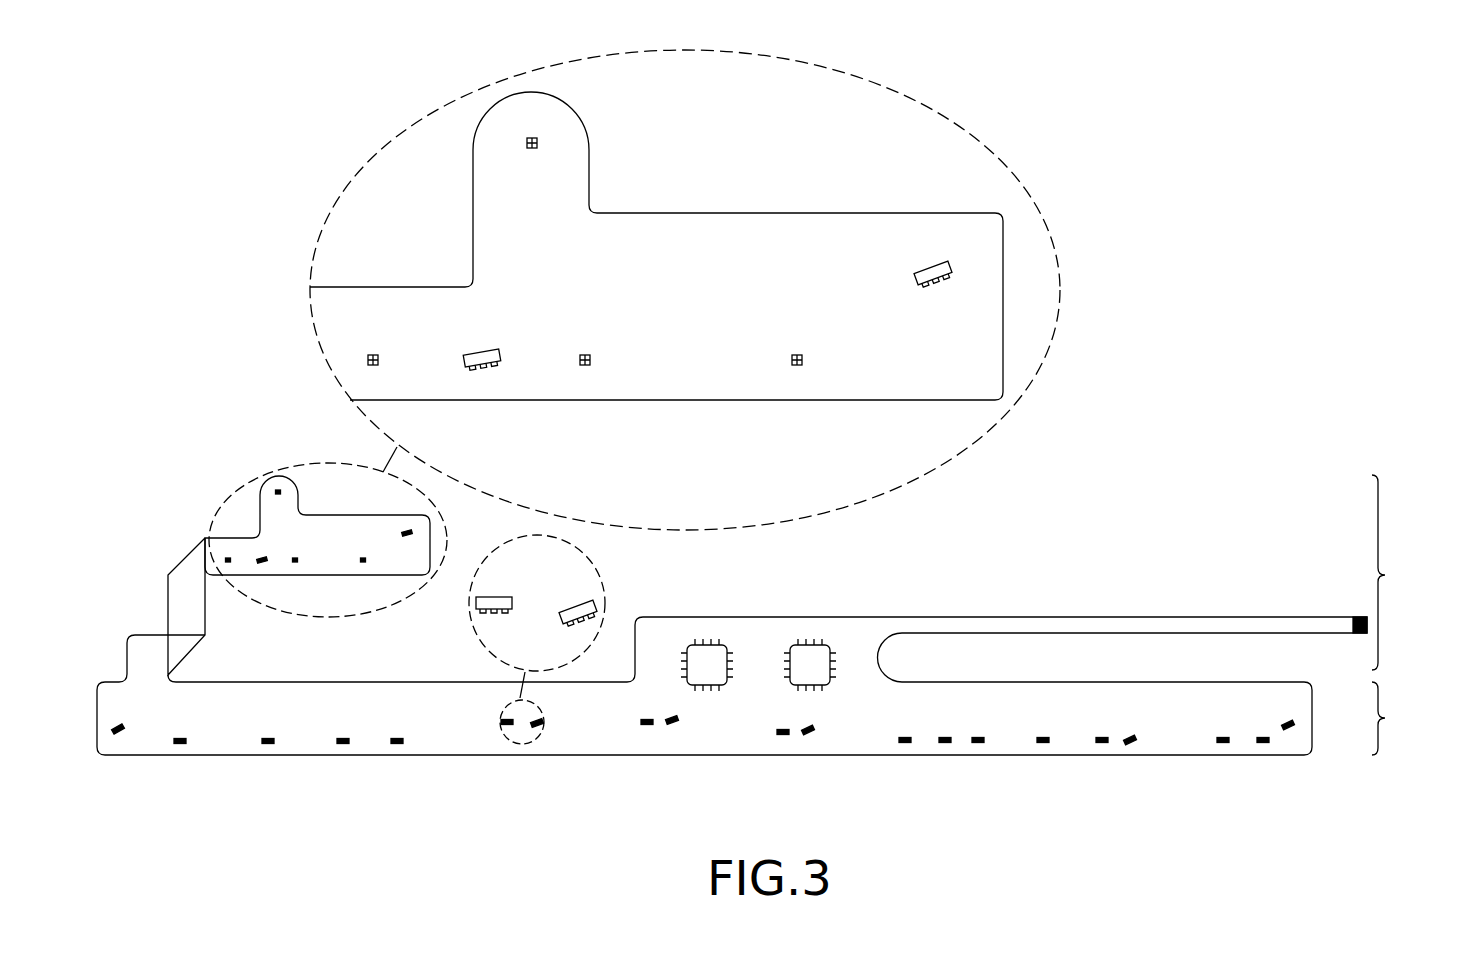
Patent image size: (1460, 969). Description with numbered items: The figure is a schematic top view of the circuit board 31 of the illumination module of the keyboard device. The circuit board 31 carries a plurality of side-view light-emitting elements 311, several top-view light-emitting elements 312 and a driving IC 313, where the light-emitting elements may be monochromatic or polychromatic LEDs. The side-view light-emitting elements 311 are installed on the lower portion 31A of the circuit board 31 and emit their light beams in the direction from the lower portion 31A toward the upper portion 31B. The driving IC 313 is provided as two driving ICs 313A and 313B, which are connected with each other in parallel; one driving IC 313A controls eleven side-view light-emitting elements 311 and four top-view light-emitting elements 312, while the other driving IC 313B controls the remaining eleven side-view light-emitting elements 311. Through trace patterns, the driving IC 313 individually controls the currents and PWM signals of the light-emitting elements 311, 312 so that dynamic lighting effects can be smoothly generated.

The circuit board 31 is at (1114, 569).
The side-view light-emitting element 311 is at (488, 350).
The top-view light-emitting element 312 is at (536, 150).
The driving IC 313 is at (1003, 534).
The driving IC 313A is at (708, 655).
The driving IC 313B is at (808, 658).
The lower portion 31A is at (765, 718).
The upper portion 31B is at (1034, 578).